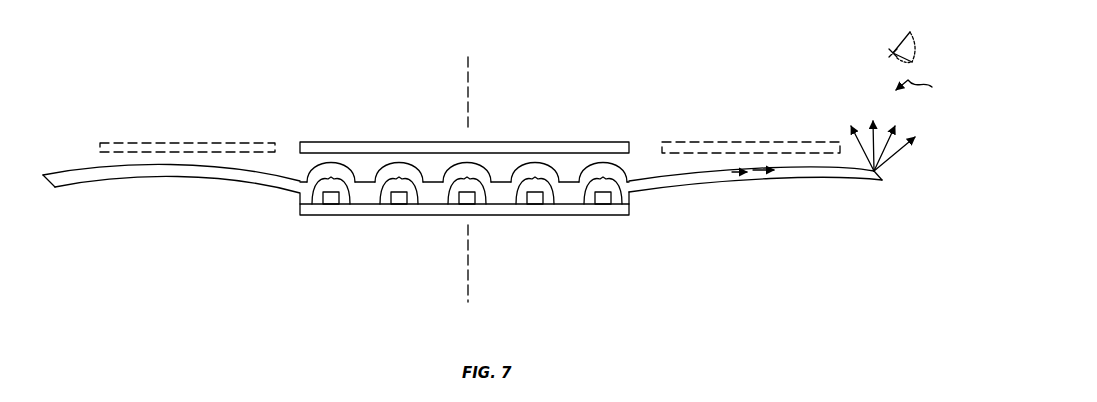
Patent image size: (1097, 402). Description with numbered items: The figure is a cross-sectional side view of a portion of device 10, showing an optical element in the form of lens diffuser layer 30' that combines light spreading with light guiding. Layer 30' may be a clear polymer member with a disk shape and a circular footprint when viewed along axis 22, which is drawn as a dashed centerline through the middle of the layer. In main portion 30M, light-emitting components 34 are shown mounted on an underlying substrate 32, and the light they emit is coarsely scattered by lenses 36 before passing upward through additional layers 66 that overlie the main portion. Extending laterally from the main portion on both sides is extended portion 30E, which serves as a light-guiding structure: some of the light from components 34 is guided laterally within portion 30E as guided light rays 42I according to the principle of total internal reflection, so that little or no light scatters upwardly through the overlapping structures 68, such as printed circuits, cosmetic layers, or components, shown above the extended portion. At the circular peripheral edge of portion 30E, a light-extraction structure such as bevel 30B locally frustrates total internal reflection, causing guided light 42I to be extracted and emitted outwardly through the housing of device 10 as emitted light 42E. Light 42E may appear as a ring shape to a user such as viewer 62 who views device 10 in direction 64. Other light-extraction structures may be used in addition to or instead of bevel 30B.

The device 10 is at (95, 59).
The axis 22 is at (469, 85).
The lens diffuser layer 30' is at (358, 126).
The bevel 30B is at (878, 183).
The extended portion 30E is at (113, 176).
The main portion 30M is at (430, 208).
The substrate 32 is at (600, 216).
The components 34 is at (332, 205).
The lenses 36 is at (601, 161).
The emitted light 42E is at (904, 143).
The guided light rays 42I is at (765, 177).
The viewer 62 is at (915, 45).
The direction 64 is at (922, 87).
The additional layers 66 is at (410, 142).
The overlapping structures 68 is at (187, 143).